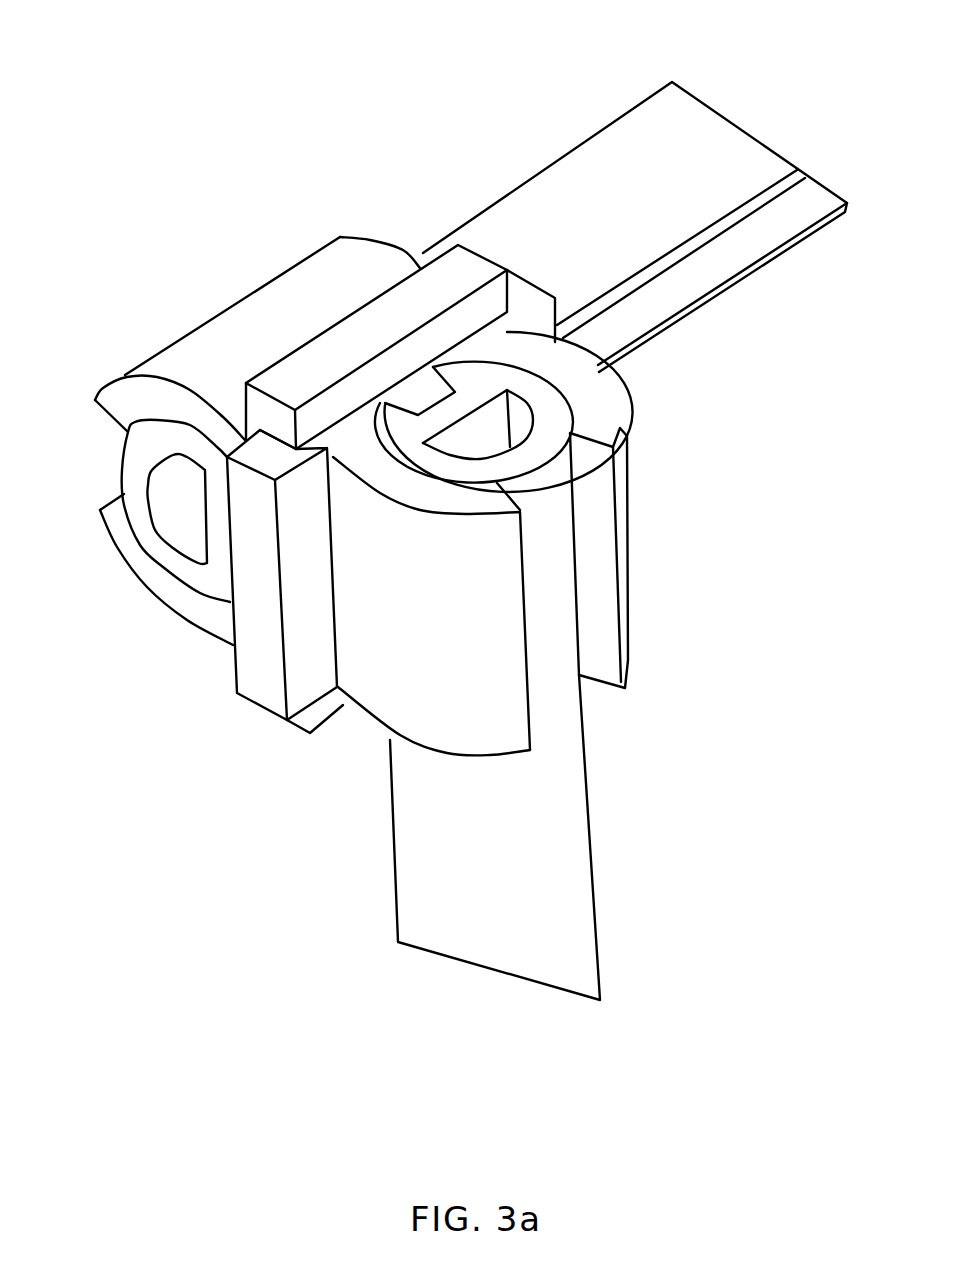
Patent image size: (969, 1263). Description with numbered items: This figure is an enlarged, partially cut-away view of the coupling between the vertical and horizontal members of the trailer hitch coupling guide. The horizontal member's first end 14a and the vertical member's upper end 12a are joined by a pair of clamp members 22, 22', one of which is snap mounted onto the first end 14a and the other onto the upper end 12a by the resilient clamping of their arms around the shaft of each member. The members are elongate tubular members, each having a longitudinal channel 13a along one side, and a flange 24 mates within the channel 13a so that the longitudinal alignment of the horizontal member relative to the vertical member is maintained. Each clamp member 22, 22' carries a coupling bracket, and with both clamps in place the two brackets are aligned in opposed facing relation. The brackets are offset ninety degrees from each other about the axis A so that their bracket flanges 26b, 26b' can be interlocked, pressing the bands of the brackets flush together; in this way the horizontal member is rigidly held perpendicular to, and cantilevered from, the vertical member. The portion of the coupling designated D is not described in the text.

The first end of horizontal member 14a is at (645, 123).
The longitudinal channel 13a is at (685, 293).
The flange 24 is at (425, 390).
The clamp member 22' is at (325, 351).
The clamp member 22 is at (442, 593).
The bracket flange 26b' is at (376, 280).
The bracket flange 26b is at (214, 612).
The upper end of vertical member 12a is at (573, 822).
The axis A is at (152, 330).
The wedge section D is at (115, 562).